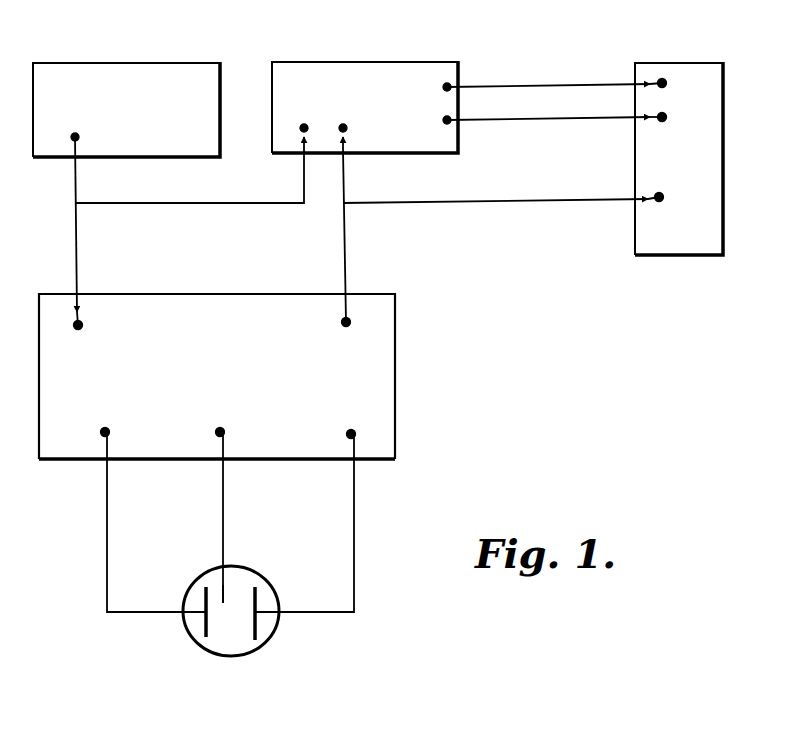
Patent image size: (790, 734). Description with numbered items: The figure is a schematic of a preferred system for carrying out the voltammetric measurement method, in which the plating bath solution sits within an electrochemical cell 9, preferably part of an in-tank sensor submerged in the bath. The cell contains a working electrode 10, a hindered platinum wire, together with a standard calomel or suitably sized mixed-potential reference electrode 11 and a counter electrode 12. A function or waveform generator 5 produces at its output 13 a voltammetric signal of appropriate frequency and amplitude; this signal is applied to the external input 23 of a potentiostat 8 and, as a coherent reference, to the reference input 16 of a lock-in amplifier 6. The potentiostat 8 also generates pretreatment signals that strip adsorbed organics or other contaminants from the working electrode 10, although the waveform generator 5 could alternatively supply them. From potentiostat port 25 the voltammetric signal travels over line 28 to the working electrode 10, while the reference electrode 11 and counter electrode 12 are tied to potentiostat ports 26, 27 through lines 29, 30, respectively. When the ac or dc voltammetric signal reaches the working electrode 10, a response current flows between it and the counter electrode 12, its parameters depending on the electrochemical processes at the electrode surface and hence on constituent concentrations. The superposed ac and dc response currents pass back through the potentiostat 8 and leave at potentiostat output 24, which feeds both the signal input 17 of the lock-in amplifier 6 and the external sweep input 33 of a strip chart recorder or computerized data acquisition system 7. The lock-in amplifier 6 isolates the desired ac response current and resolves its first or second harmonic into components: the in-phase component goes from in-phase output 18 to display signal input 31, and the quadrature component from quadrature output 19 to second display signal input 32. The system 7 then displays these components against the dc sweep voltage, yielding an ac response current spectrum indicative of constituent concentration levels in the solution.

The waveform generator 5 is at (220, 63).
The lock-in amplifier 6 is at (430, 153).
The strip chart recorder or computerized data acquisition system 7 is at (723, 255).
The potentiostat 8 is at (395, 395).
The electrochemical cell 9 is at (231, 642).
The working electrode 10 is at (206, 630).
The reference electrode 11 is at (218, 600).
The counter electrode 12 is at (258, 602).
The output 13 is at (78, 140).
The reference input 16 is at (300, 133).
The signal input 17 is at (346, 132).
The in-phase output 18 is at (445, 83).
The quadrature output 19 is at (449, 124).
The external input 23 is at (80, 322).
The potentiostat output 24 is at (350, 320).
The potentiostat port 25 is at (108, 435).
The potentiostat port 26 is at (223, 435).
The potentiostat port 27 is at (353, 437).
The line 28 is at (107, 525).
The line 29 is at (223, 525).
The line 30 is at (354, 528).
The display signal input 31 is at (664, 80).
The second display signal input 32 is at (662, 121).
The external sweep input 33 is at (657, 200).